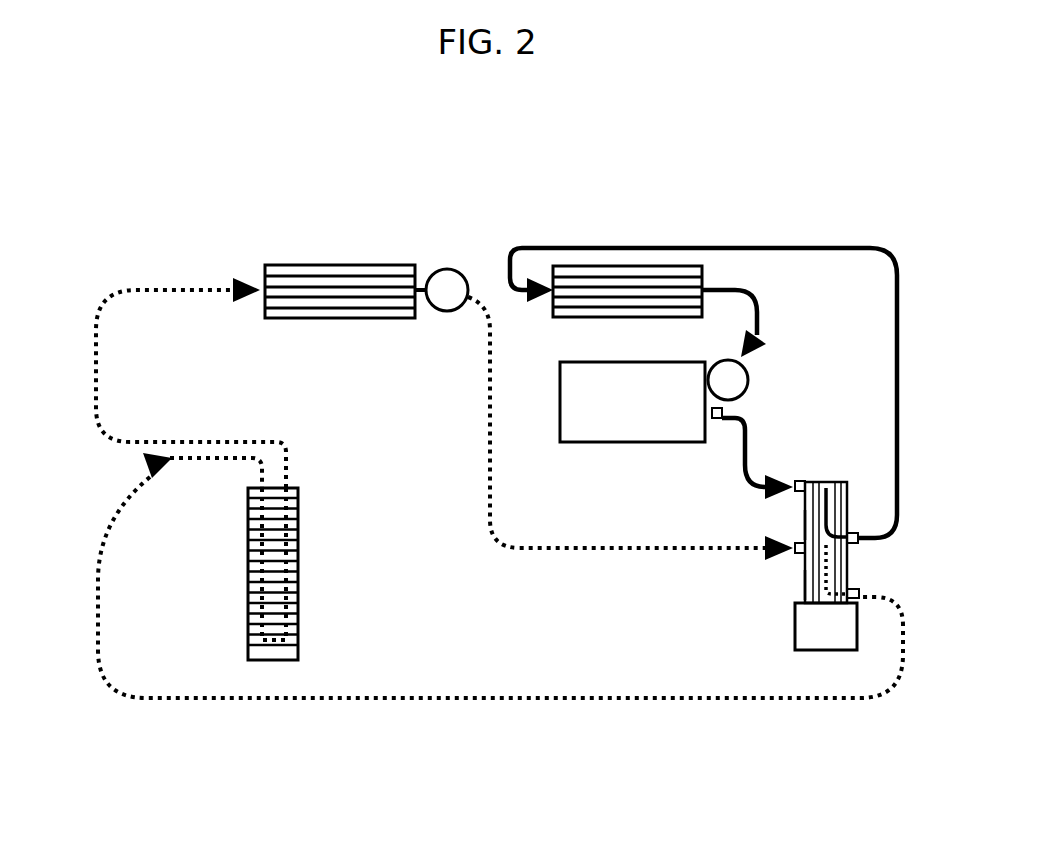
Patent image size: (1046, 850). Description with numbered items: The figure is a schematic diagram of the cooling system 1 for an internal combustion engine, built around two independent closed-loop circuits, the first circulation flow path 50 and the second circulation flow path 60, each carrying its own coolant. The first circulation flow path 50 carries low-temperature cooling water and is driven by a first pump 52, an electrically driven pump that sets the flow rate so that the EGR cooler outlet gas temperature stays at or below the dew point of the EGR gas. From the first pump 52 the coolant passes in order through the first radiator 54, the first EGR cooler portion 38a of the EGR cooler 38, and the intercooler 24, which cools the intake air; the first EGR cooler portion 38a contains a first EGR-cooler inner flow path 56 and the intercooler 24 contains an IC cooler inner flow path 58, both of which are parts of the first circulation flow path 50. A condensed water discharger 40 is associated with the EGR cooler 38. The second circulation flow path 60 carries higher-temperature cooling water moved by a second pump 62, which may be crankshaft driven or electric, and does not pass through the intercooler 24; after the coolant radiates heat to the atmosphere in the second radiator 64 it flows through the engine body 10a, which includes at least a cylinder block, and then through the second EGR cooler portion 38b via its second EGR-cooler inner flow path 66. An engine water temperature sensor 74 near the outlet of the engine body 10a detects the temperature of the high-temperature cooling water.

The cooling system 1 is at (816, 194).
The engine body 10a is at (638, 443).
The intercooler 24 is at (292, 488).
The EGR cooler 38 is at (826, 470).
The first EGR cooler portion 38a is at (805, 590).
The second EGR cooler portion 38b is at (805, 530).
The condensed water discharger 40 is at (795, 627).
The first circulation flow path 50 is at (466, 696).
The first pump 52 is at (445, 269).
The first radiator 54 is at (310, 265).
The first EGR-cooler inner flow path 56 is at (835, 571).
The IC cooler inner flow path 58 is at (262, 530).
The second circulation flow path 60 is at (690, 245).
The second pump 62 is at (750, 366).
The second radiator 64 is at (610, 266).
The second EGR-cooler inner flow path 66 is at (832, 499).
The engine water temperature sensor 74 is at (722, 412).